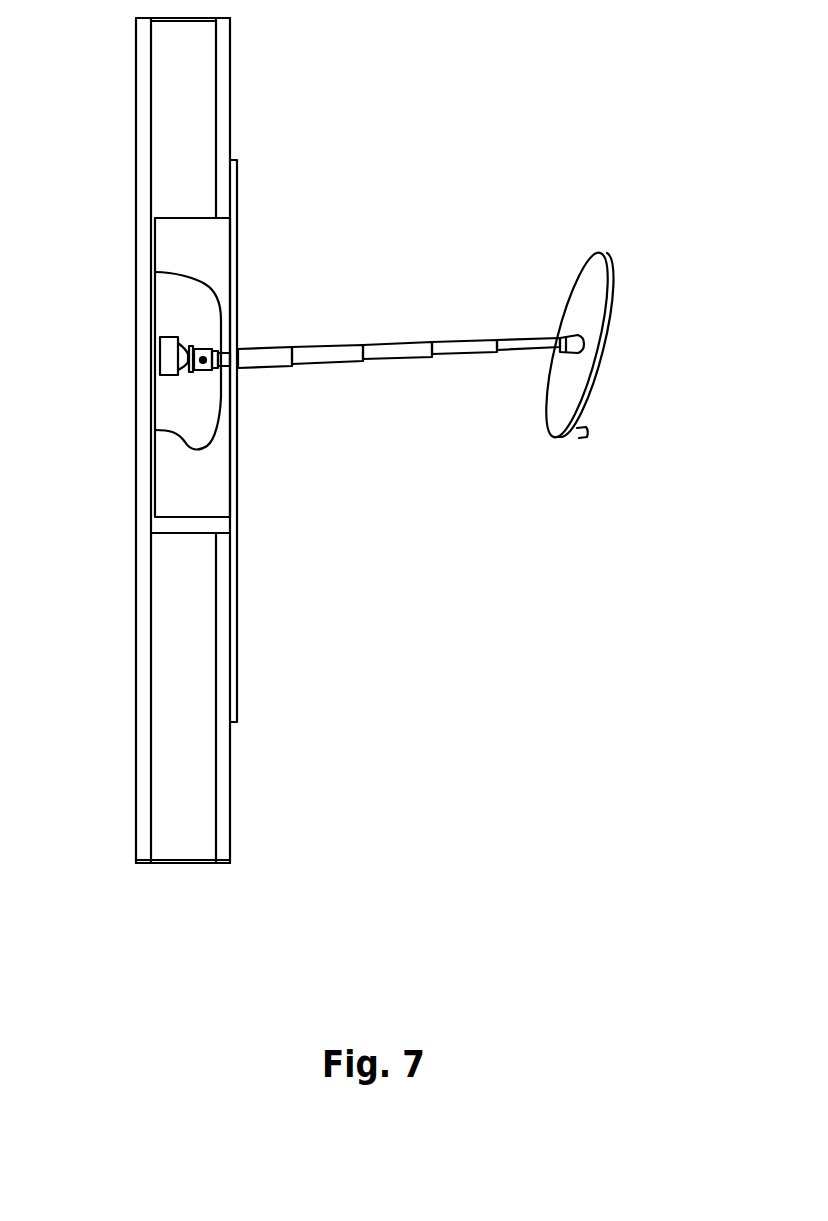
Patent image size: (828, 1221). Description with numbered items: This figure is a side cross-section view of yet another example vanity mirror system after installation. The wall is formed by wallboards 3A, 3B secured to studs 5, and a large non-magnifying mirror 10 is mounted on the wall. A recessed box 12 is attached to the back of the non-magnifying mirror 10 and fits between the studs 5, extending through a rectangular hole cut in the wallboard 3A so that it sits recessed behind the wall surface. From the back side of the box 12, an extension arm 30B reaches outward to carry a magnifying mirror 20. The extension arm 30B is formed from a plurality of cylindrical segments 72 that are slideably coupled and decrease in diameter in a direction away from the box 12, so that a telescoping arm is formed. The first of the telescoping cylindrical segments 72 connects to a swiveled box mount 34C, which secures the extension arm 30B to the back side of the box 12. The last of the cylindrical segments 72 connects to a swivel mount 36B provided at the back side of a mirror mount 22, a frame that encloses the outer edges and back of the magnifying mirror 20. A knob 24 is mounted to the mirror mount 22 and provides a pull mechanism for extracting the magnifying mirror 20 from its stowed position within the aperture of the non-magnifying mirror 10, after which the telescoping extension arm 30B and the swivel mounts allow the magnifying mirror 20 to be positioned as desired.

The wallboard 3A is at (228, 795).
The wallboard 3B is at (134, 795).
The stud 5 is at (168, 863).
The non-magnifying mirror 10 is at (238, 672).
The recessed box 12 is at (197, 517).
The swiveled box mount 34C is at (182, 348).
The cylindrical segments 72 is at (460, 340).
The extension arm 30B is at (438, 267).
The magnifying mirror 20 is at (613, 328).
The mirror mount 22 is at (607, 258).
The swivel mount 36B is at (570, 348).
The knob 24 is at (587, 432).